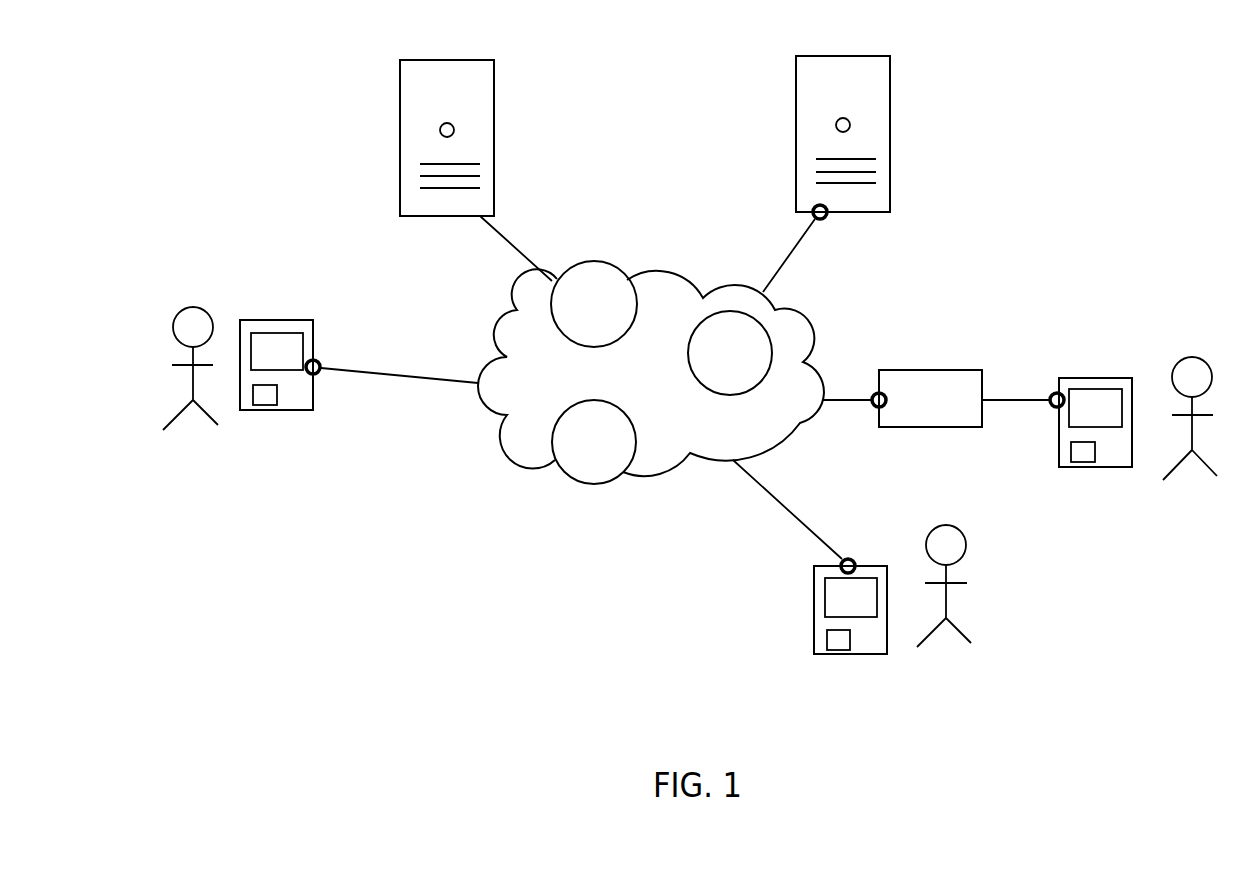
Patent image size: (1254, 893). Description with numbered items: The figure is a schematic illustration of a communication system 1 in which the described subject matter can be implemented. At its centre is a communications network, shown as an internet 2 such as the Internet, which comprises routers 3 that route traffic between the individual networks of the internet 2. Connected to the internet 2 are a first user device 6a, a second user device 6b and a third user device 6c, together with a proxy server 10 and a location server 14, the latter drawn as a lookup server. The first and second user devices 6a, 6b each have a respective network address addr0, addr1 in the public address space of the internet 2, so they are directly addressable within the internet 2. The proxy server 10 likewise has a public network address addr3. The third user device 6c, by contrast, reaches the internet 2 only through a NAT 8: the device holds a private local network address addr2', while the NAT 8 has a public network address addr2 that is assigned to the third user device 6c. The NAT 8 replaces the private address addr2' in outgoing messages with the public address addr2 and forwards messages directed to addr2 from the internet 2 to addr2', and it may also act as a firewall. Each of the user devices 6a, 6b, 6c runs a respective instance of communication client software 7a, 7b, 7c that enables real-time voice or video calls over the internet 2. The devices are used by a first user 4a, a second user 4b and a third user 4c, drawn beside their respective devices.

The communication system 1 is at (224, 124).
The internet 2 is at (657, 472).
The routers 3 is at (603, 270).
The first user 4a is at (173, 328).
The second user 4b is at (966, 540).
The third user 4c is at (1172, 378).
The first user device 6a is at (278, 320).
The second user device 6b is at (814, 612).
The third user device 6c is at (1059, 453).
The communication client software 7a is at (265, 405).
The communication client software 7b is at (835, 650).
The communication client software 7c is at (1095, 450).
The NAT 8 is at (930, 427).
The proxy server 10 is at (890, 118).
The location server 14 is at (494, 123).
The network address addr0 is at (320, 360).
The network address addr1 is at (848, 555).
The network address addr2 is at (856, 427).
The private local network address addr2' is at (1030, 372).
The network address addr3 is at (823, 220).